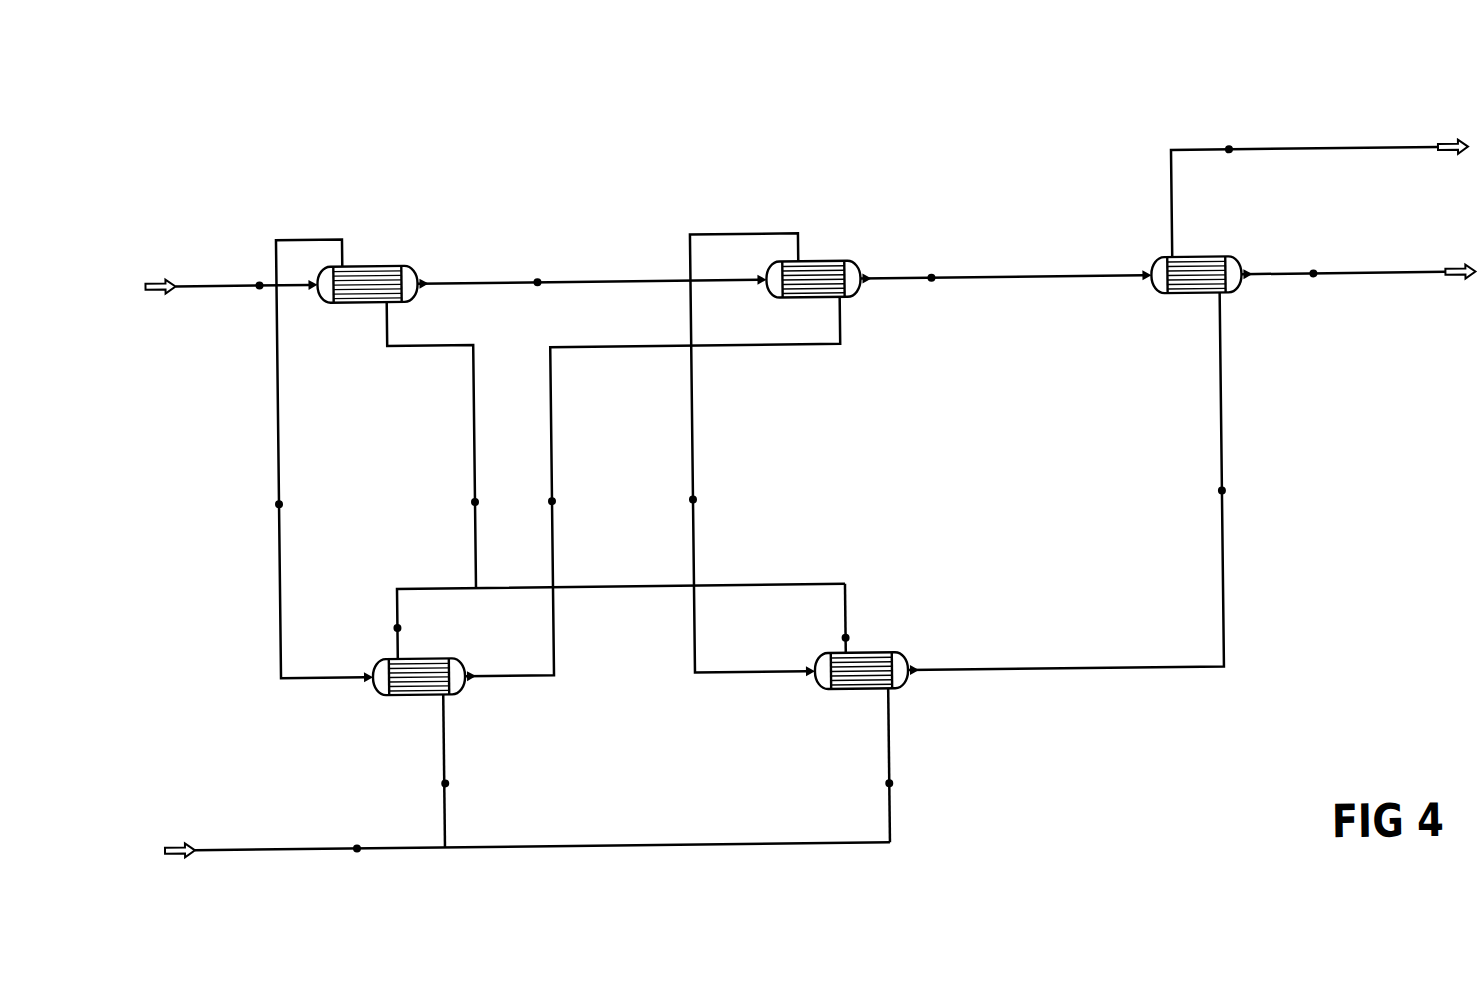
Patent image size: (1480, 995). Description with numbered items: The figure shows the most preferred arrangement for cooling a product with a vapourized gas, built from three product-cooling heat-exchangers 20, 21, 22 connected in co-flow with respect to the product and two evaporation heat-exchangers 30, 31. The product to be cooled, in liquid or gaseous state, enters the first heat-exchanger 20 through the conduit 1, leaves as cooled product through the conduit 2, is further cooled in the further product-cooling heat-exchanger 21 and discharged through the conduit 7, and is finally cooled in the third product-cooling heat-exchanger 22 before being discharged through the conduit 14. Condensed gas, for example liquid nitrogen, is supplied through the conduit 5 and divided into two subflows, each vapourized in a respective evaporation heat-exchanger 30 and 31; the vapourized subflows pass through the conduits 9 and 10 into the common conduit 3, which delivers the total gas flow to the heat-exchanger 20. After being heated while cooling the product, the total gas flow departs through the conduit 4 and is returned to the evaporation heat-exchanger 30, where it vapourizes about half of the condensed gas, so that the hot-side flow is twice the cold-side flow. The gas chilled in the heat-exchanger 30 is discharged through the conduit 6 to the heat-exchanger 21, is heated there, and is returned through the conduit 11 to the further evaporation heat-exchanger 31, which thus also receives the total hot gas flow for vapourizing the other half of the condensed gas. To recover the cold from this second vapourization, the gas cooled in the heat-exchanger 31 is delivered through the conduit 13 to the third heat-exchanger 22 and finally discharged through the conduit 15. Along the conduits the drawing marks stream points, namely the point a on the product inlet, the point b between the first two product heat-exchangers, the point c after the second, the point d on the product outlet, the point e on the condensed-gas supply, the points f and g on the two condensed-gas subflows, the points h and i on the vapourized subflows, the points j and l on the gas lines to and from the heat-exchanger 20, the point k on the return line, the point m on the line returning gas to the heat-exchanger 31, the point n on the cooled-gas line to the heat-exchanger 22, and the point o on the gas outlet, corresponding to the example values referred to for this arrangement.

The conduit 1 is at (262, 280).
The conduit 2 is at (607, 280).
The conduit 3 is at (477, 400).
The conduit 4 is at (279, 400).
The conduit 5 is at (272, 844).
The conduit 6 is at (552, 620).
The conduit 7 is at (985, 280).
The conduit 9 is at (431, 585).
The conduit 10 is at (844, 622).
The conduit 11 is at (716, 234).
The conduit 13 is at (1222, 396).
The conduit 14 is at (1371, 280).
The conduit 15 is at (1275, 155).
The heat-exchanger 20 is at (406, 262).
The further product-cooling heat-exchanger 21 is at (840, 262).
The third product-cooling heat-exchanger 22 is at (1235, 262).
The evaporation heat-exchanger 30 is at (452, 655).
The further evaporation heat-exchanger 31 is at (835, 690).
The stream point a is at (258, 269).
The stream point b is at (537, 264).
The stream point c is at (932, 262).
The stream point d is at (1313, 257).
The stream point e is at (356, 832).
The stream point f is at (435, 782).
The stream point g is at (877, 775).
The stream point h is at (833, 639).
The stream point i is at (387, 629).
The stream point j is at (465, 497).
The stream point k is at (264, 504).
The stream point l is at (541, 500).
The stream point m is at (677, 498).
The stream point n is at (1209, 488).
The stream point o is at (1228, 133).